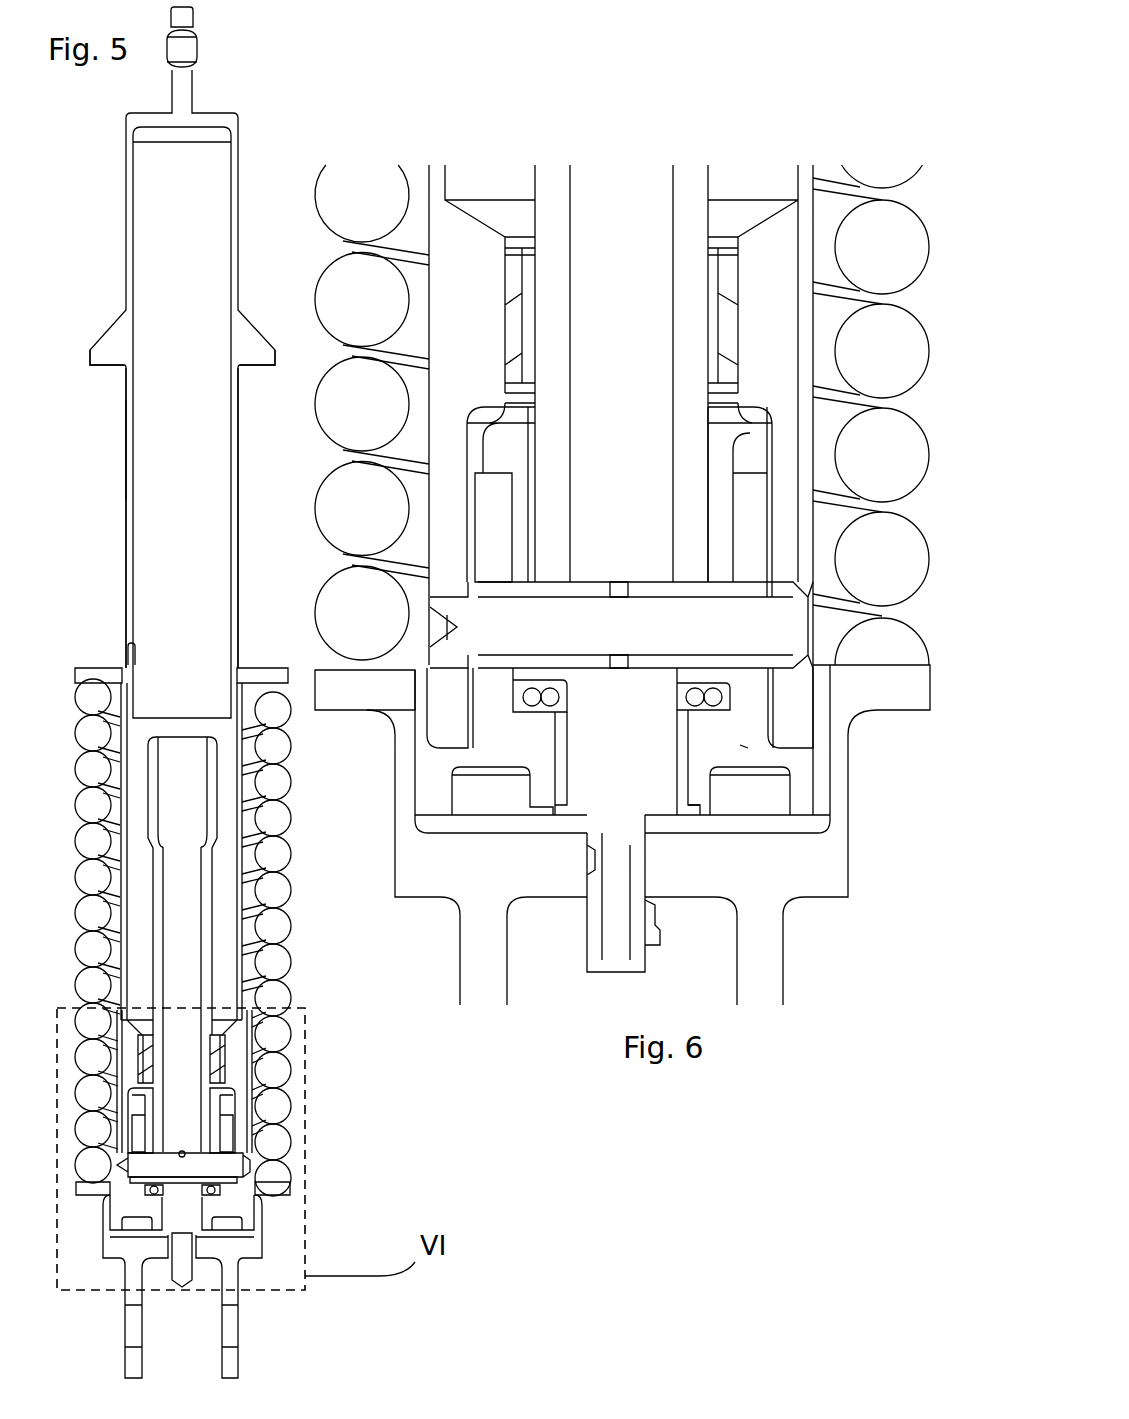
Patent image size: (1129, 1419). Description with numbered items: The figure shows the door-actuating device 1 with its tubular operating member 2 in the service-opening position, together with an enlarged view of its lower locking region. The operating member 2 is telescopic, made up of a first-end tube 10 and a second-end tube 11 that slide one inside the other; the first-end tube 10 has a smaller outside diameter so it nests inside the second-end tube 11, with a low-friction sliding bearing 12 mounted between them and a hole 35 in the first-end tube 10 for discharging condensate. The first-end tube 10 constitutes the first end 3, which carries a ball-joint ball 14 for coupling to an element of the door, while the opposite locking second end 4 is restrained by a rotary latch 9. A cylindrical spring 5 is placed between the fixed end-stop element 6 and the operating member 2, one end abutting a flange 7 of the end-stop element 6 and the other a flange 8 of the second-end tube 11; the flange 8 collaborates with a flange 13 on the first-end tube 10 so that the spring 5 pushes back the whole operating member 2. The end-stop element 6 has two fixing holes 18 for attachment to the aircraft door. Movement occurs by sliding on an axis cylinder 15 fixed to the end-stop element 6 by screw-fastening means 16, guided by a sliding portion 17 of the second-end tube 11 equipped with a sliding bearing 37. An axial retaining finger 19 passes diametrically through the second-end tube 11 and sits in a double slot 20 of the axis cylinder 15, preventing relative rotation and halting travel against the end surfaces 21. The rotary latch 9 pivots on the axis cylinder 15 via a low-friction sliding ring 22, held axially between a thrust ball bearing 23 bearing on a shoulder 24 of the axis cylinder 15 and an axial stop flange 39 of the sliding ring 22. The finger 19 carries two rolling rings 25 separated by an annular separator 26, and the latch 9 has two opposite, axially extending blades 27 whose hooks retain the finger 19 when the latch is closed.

In FIG. 5, the device 1 is at (292, 110).
In FIG. 5, the operating member 2 is at (122, 501).
In FIG. 6, the operating member 2 is at (712, 165).
In FIG. 5, the first end 3 is at (228, 125).
In FIG. 5, the second end 4 is at (242, 1196).
In FIG. 6, the second end 4 is at (800, 710).
In FIG. 5, the cylindrical spring 5 is at (276, 857).
In FIG. 6, the cylindrical spring 5 is at (882, 245).
In FIG. 5, the fixed end-stop element 6 is at (115, 1250).
In FIG. 6, the fixed end-stop element 6 is at (835, 881).
In FIG. 5, the flange 7 is at (92, 1188).
In FIG. 6, the flange 7 is at (345, 700).
In FIG. 5, the flange 8 is at (255, 680).
In FIG. 5, the rotary latch 9 is at (232, 1138).
In FIG. 6, the rotary latch 9 is at (737, 745).
In FIG. 5, the first-end tube 10 is at (238, 250).
In FIG. 5, the second-end tube 11 is at (117, 868).
In FIG. 6, the second-end tube 11 is at (437, 178).
In FIG. 5, the sliding bearing 12 is at (240, 695).
In FIG. 5, the flange 13 is at (258, 360).
In FIG. 5, the ball-joint ball 14 is at (186, 47).
In FIG. 5, the axis cylinder 15 is at (178, 755).
In FIG. 6, the axis cylinder 15 is at (562, 213).
In FIG. 5, the screw-fastening means 16 is at (185, 1282).
In FIG. 6, the screw-fastening means 16 is at (640, 955).
In FIG. 5, the sliding portion 17 is at (230, 1048).
In FIG. 6, the sliding portion 17 is at (755, 295).
In FIG. 5, the fixing holes 18 is at (232, 1338).
In FIG. 5, the axial retaining finger 19 is at (147, 1165).
In FIG. 6, the axial retaining finger 19 is at (595, 607).
In FIG. 5, the double slot 20 is at (205, 942).
In FIG. 5, the end surfaces 21 is at (205, 843).
In FIG. 6, the sliding ring 22 is at (683, 790).
In FIG. 6, the thrust ball bearing 23 is at (562, 712).
In FIG. 6, the shoulder 24 is at (530, 685).
In FIG. 6, the rolling rings 25 is at (645, 585).
In FIG. 6, the annular separator 26 is at (620, 583).
In FIG. 6, the blades 27 is at (487, 540).
In FIG. 5, the hole 35 is at (125, 645).
In FIG. 5, the sliding bearing 37 is at (232, 1077).
In FIG. 6, the sliding bearing 37 is at (725, 367).
In FIG. 6, the axial stop flange 39 is at (698, 818).